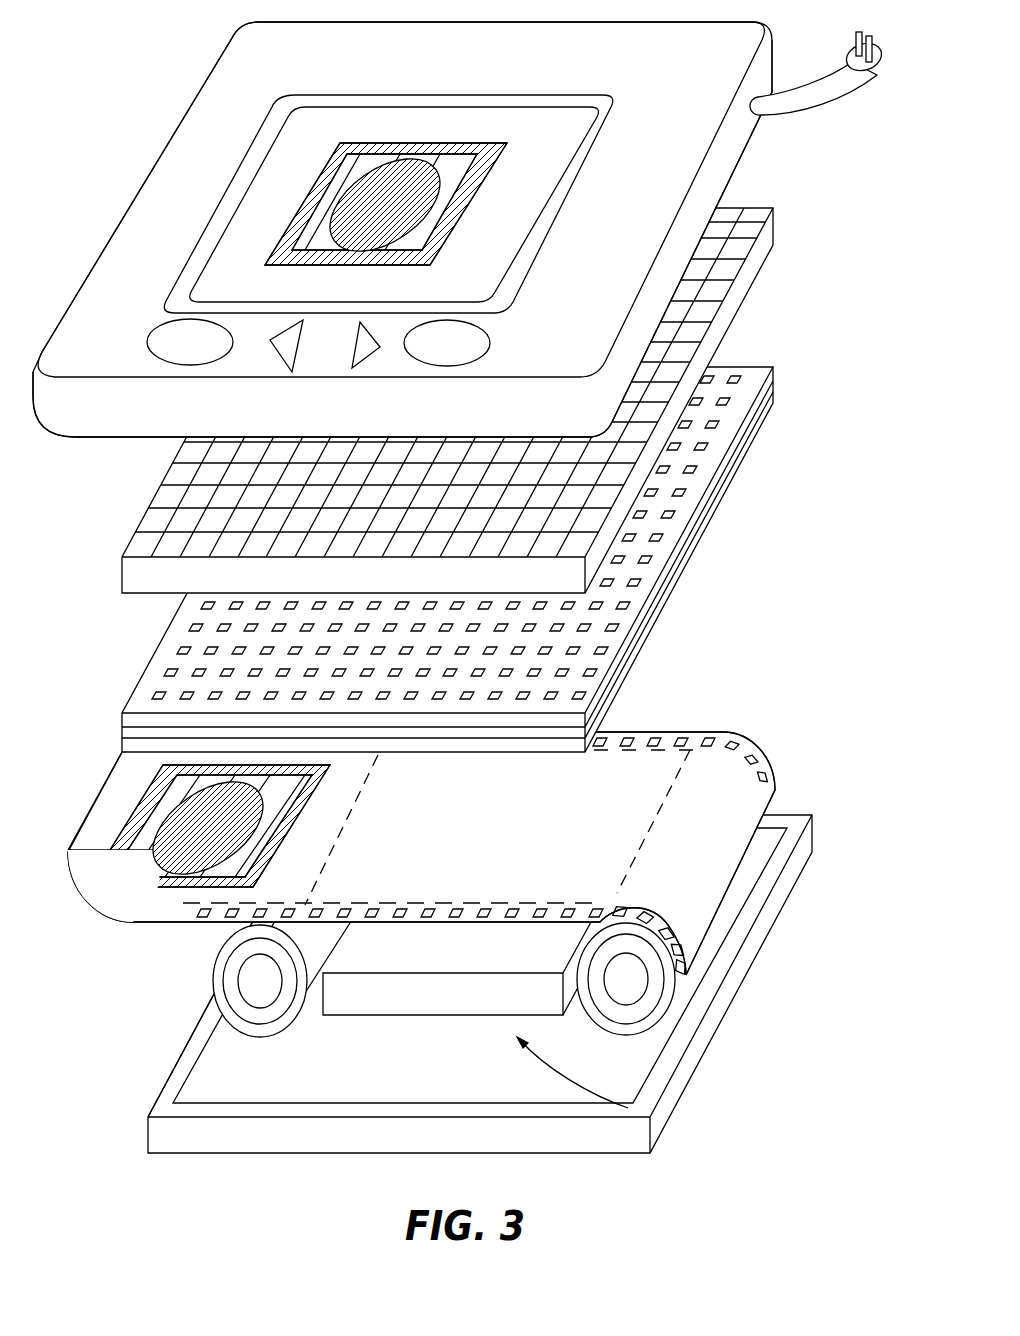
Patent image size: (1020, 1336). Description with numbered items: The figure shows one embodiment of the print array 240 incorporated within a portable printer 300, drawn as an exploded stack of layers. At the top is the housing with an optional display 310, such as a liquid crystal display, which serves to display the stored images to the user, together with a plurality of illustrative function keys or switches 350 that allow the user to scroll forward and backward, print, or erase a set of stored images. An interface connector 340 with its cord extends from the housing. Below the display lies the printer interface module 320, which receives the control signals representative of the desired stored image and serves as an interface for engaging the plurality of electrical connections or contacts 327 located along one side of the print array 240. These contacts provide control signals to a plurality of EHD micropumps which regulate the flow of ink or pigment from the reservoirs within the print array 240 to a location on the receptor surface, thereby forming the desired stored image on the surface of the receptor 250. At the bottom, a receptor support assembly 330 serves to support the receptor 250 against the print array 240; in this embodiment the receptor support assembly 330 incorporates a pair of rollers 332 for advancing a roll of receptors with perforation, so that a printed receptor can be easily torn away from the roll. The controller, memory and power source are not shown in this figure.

The portable printer 300 is at (459, 576).
The display 310 is at (439, 229).
The printer interface module 320 is at (687, 312).
The print array 240 is at (481, 559).
The electrical connections or contacts 327 is at (636, 584).
The receptor 250 is at (710, 828).
The rollers 332 is at (643, 987).
The receptor support assembly 330 is at (603, 1100).
The interface connector 340 is at (818, 112).
The switches 350 is at (148, 340).